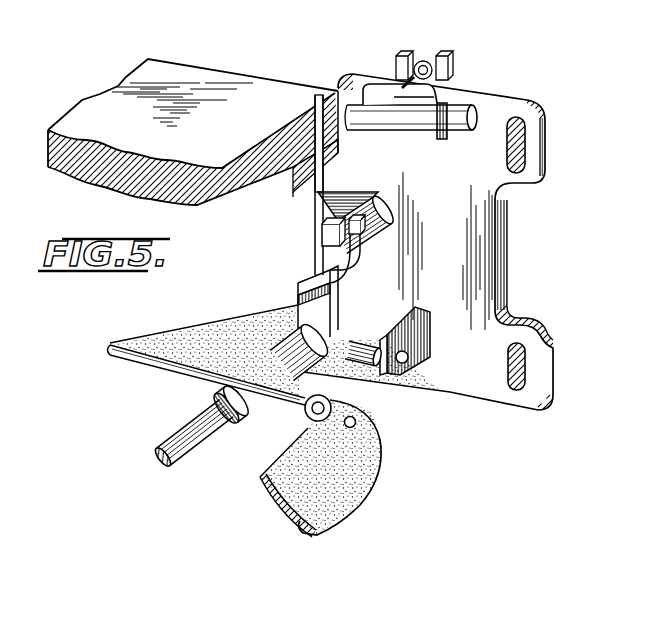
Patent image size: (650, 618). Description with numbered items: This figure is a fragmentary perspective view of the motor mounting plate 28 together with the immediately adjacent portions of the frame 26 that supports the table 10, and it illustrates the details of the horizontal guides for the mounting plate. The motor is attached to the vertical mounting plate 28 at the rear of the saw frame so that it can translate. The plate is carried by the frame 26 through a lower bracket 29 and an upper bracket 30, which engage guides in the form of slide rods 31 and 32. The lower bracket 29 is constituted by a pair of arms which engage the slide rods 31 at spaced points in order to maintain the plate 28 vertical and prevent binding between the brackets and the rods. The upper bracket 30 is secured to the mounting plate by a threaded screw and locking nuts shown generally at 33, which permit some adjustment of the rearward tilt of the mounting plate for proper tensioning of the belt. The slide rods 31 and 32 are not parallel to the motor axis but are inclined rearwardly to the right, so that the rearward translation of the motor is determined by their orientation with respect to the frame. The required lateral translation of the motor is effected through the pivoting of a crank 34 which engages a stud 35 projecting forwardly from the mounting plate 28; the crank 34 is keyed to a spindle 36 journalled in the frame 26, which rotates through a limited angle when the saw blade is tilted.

The table 10 is at (193, 132).
The frame 26 is at (293, 184).
The mounting plate 28 is at (500, 265).
The lower bracket 29 is at (294, 305).
The upper bracket 30 is at (432, 127).
The slide rods 31 is at (388, 343).
The slide rod 32 is at (373, 122).
The threaded screw and locking nuts 33 is at (427, 57).
The crank 34 is at (353, 283).
The stud 35 is at (322, 243).
The spindle 36 is at (165, 463).